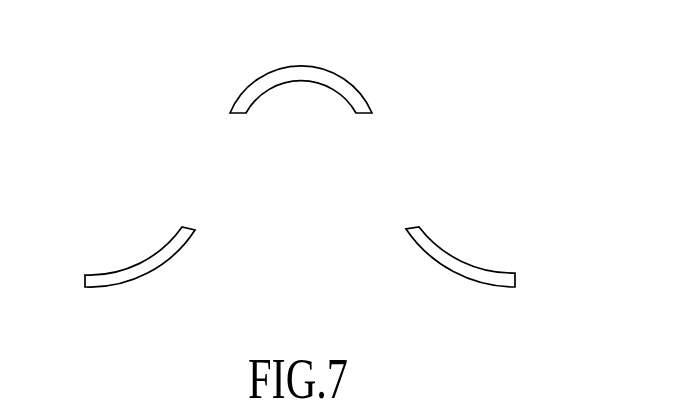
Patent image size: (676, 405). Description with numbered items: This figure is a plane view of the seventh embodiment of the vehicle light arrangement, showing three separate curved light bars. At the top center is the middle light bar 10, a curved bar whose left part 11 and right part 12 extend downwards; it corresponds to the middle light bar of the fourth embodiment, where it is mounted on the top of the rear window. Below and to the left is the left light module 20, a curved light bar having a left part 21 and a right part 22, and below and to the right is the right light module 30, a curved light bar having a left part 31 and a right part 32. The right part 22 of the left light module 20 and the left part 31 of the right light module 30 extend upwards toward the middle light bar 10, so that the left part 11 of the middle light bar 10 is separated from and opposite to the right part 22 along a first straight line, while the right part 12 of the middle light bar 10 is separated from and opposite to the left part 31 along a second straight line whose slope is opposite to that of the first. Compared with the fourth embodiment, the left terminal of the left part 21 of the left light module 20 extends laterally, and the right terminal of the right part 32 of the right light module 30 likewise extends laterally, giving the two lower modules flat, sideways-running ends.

The middle light bar 10 is at (267, 53).
The left part of the middle light bar 11 is at (240, 100).
The right part of the middle light bar 12 is at (355, 97).
The left light module 20 is at (127, 229).
The left part of the left light module 21 is at (100, 282).
The right part of the left light module 22 is at (187, 238).
The right light module 30 is at (498, 213).
The left part of the right light module 31 is at (416, 239).
The right part of the right light module 32 is at (505, 285).